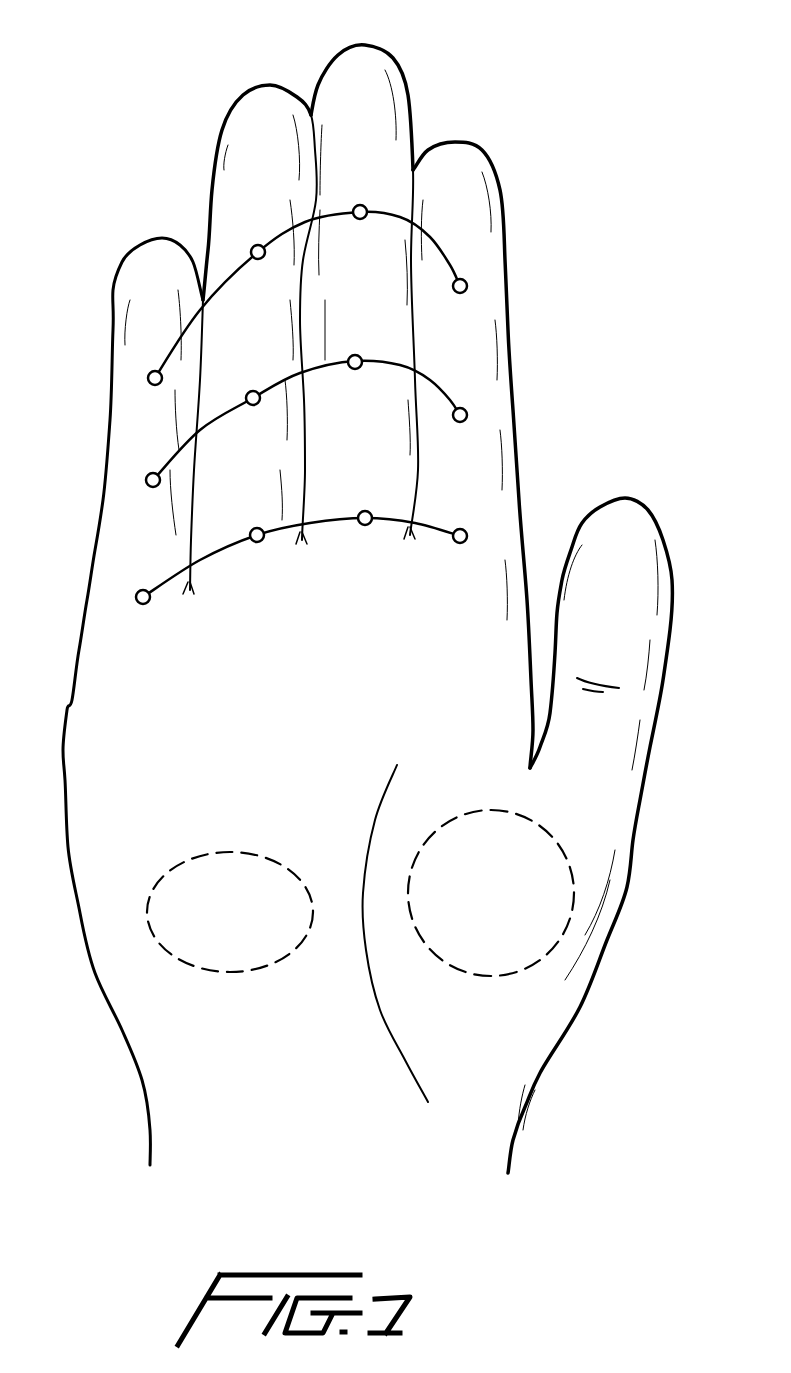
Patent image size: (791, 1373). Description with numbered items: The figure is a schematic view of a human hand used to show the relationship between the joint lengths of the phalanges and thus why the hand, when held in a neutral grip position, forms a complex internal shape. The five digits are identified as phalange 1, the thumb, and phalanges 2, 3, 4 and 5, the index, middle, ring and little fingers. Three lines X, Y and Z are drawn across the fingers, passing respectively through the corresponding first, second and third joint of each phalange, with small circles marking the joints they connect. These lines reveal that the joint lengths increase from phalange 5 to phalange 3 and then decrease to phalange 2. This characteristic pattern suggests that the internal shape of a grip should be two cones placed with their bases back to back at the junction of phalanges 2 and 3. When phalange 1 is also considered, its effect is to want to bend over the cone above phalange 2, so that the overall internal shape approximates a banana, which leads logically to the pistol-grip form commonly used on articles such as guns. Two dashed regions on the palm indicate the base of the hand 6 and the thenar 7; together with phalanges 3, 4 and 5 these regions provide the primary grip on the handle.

The phalange 1 is at (590, 818).
The phalange 2 is at (473, 439).
The phalange 3 is at (364, 271).
The phalange 4 is at (260, 297).
The phalange 5 is at (153, 367).
The base of the hand 6 is at (178, 925).
The thenar 7 is at (557, 893).
The line x is at (339, 295).
The line y is at (344, 421).
The line z is at (339, 557).